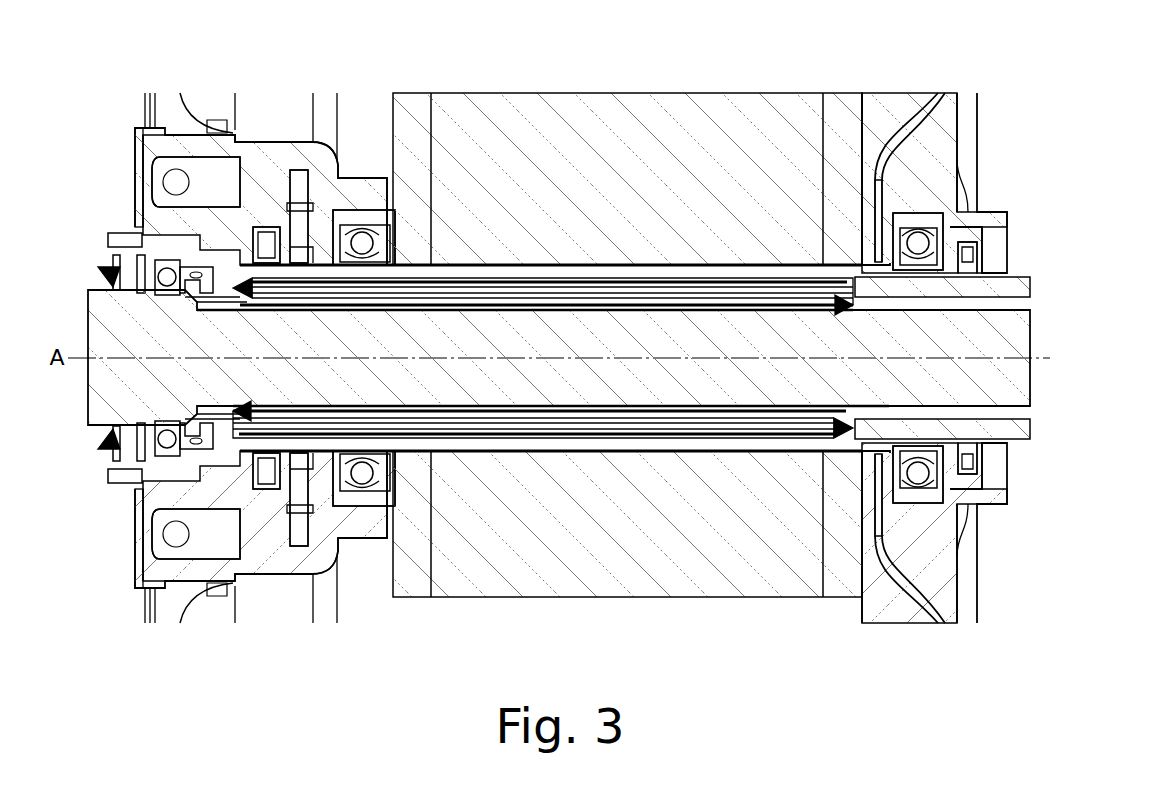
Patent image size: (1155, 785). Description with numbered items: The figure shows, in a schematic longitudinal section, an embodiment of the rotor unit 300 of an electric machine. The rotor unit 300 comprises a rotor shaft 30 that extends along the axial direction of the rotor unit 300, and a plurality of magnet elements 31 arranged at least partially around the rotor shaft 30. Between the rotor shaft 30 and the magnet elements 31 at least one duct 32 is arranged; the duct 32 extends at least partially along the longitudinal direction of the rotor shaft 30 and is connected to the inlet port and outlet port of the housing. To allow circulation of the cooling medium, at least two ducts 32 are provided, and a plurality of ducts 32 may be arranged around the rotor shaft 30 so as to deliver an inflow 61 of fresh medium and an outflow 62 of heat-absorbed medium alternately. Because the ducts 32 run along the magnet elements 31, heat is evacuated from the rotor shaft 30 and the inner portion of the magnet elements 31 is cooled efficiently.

The rotor unit 300 is at (1023, 92).
The rotor shaft 30 is at (1012, 333).
The magnet elements 31 is at (595, 213).
The duct 32 is at (692, 283).
The inflow 61 is at (452, 303).
The outflow 62 is at (518, 283).